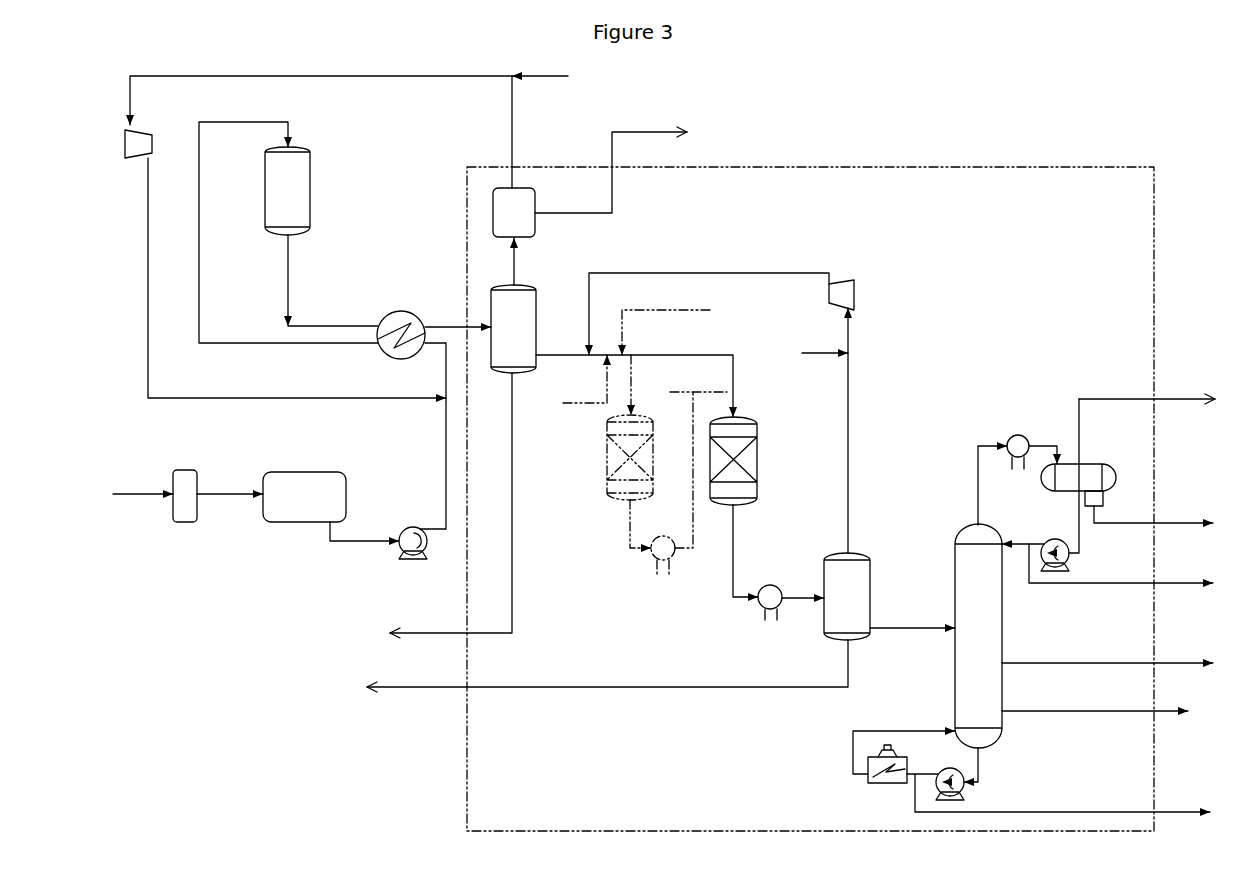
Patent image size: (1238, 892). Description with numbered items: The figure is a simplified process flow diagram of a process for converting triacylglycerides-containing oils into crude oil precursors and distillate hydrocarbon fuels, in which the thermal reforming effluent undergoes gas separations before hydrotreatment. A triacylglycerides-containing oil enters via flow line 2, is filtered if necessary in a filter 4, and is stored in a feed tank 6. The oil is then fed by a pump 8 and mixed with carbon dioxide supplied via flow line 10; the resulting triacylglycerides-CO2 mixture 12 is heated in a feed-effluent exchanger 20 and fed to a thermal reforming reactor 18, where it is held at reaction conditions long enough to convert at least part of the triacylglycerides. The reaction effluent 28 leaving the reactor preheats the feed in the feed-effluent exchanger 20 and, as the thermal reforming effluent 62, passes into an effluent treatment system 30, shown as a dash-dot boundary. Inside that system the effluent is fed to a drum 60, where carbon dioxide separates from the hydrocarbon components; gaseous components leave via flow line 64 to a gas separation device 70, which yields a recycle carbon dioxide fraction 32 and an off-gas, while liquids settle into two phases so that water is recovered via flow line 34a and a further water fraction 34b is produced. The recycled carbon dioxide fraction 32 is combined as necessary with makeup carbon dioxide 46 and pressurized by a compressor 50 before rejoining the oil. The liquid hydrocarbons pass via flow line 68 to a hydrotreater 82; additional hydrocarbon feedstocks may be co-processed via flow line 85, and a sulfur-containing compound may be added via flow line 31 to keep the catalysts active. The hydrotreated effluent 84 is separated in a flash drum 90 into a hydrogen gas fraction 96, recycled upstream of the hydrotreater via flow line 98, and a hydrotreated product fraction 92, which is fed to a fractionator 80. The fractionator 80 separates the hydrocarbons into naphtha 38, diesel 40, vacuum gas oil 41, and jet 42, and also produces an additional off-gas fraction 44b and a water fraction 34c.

The flow line 2 is at (137, 493).
The filter 4 is at (173, 472).
The feed tank 6 is at (268, 476).
The pump 8 is at (402, 531).
The flow line 10 is at (262, 398).
The triacylglycerides-CO2 mixture 12 is at (199, 294).
The thermal reforming reactor 18 is at (265, 193).
The feed-effluent exchanger 20 is at (388, 318).
The reaction effluent 28 is at (337, 326).
The effluent treatment system 30 is at (466, 750).
The flow line 31 is at (578, 404).
The carbon dioxide fraction 32 is at (510, 130).
The flow line 34a is at (430, 632).
The water fraction 34b is at (415, 686).
The water fraction 34c is at (1162, 523).
The naphtha 38 is at (1162, 583).
The diesel 40 is at (1167, 663).
The vacuum gas oil 41 is at (1162, 812).
The jet 42 is at (1162, 711).
The off-gas fraction 44b is at (664, 129).
The makeup carbon dioxide 46 is at (551, 76).
The compressor 50 is at (125, 147).
The drum 60 is at (491, 295).
The thermal reforming effluent 62 is at (455, 327).
The flow line 64 is at (514, 272).
The flow line 68 is at (583, 355).
The gas separation device 70 is at (493, 190).
The fractionator 80 is at (958, 538).
The hydrotreater 82 is at (610, 496).
The hydrotreated effluent 84 is at (733, 597).
The flow line 85 is at (680, 310).
The flash drum 90 is at (824, 556).
The hydrotreated product fraction 92 is at (925, 628).
The hydrogen gas fraction 96 is at (848, 452).
The flow line 98 is at (665, 273).